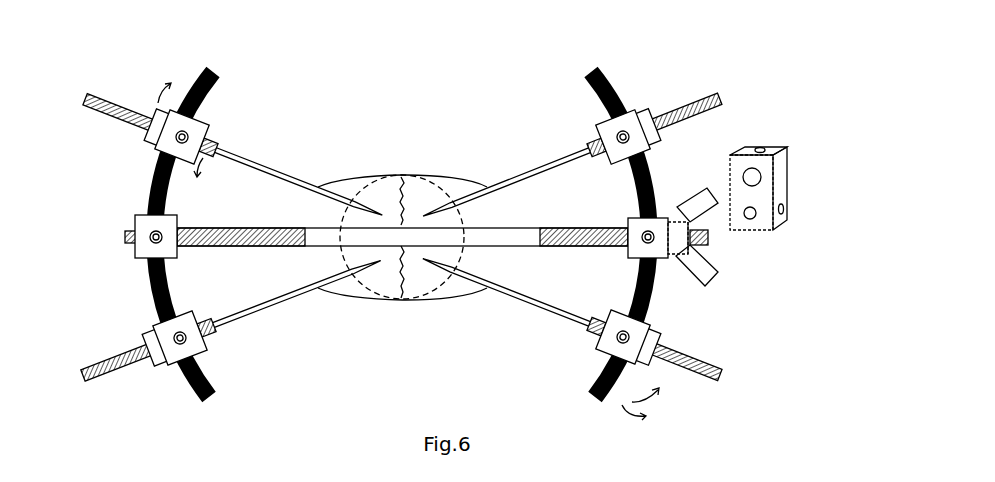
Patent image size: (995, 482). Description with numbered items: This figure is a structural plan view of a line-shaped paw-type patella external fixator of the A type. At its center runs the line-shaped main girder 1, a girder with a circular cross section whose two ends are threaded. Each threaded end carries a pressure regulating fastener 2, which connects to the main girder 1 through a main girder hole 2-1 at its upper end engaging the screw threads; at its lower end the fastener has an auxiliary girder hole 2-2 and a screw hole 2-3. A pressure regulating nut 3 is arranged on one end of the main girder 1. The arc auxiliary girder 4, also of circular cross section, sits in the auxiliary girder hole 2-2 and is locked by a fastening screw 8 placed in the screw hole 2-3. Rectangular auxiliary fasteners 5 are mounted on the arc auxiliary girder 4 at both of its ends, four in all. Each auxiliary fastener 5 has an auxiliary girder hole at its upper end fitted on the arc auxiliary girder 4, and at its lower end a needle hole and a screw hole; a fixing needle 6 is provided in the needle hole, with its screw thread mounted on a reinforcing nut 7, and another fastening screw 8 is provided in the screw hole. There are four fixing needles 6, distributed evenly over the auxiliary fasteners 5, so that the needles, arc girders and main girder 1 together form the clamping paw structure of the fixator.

The line-shaped main girder 1 is at (416, 240).
The pressure regulating fastener 2 is at (738, 160).
The main girder hole 2-1 is at (752, 178).
The auxiliary girder hole 2-2 is at (782, 210).
The screw hole 2-3 is at (760, 147).
The pressure regulating nut 3 is at (678, 243).
The arc auxiliary girder 4 is at (150, 212).
The auxiliary fastener 5 is at (643, 117).
The fixing needle 6 is at (260, 165).
The reinforcing nut 7 is at (205, 336).
The fastening screw 8 is at (156, 110).